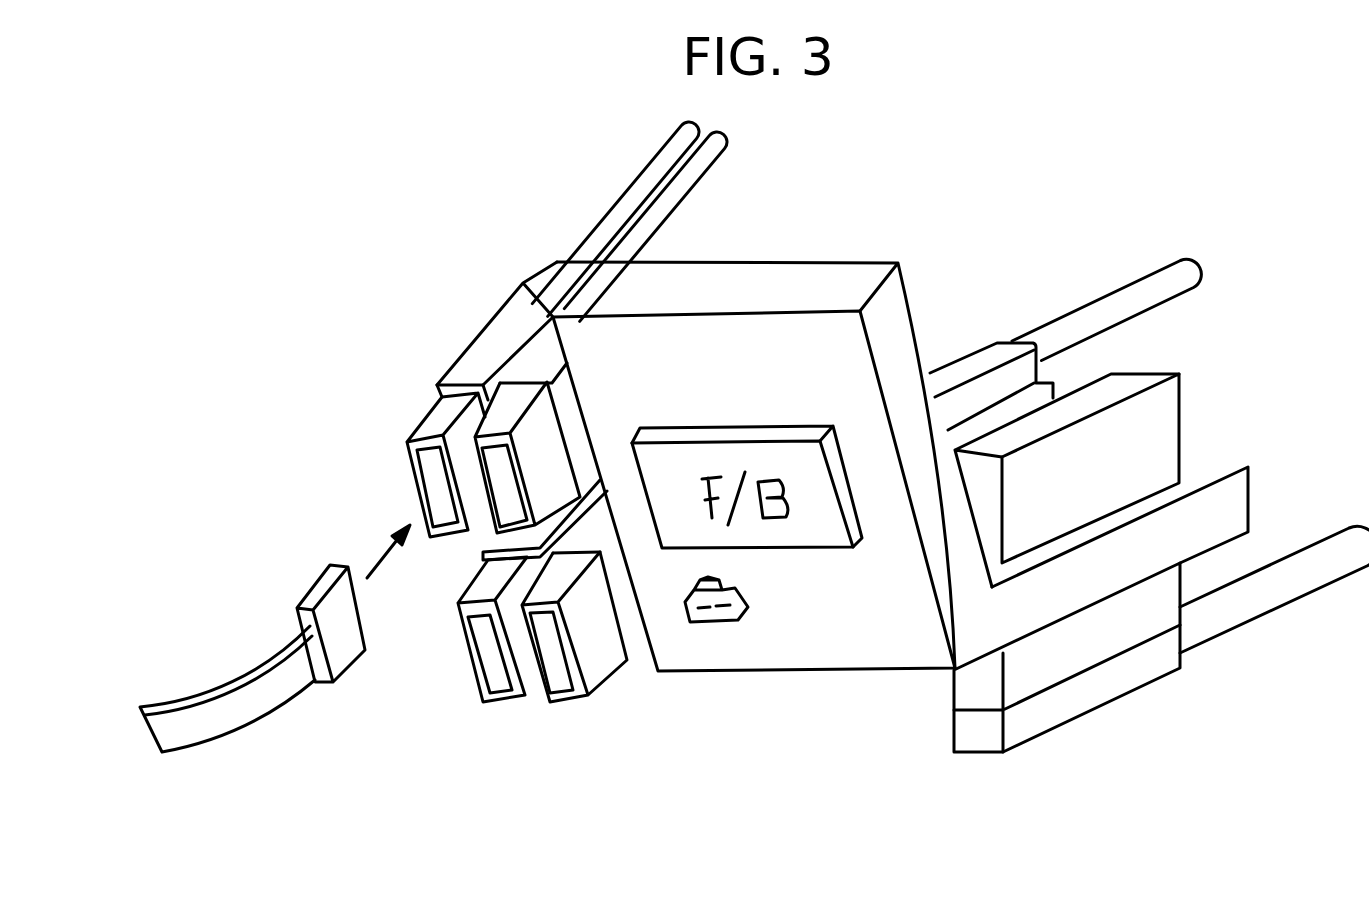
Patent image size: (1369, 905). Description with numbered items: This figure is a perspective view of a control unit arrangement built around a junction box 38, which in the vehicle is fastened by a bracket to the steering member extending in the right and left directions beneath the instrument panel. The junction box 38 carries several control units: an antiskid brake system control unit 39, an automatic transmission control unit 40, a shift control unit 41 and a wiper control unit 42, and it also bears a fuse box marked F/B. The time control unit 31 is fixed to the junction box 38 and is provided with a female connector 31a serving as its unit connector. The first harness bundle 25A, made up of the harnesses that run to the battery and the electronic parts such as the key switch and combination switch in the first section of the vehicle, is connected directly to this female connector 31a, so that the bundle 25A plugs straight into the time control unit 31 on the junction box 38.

The first harness bundle 25A is at (245, 703).
The time control unit 31 is at (530, 467).
The female connector 31a is at (318, 588).
The junction box 38 is at (836, 265).
The antiskid brake system control unit 39 is at (540, 353).
The automatic transmission control unit 40 is at (495, 548).
The shift control unit 41 is at (637, 632).
The wiper control unit 42 is at (1131, 452).